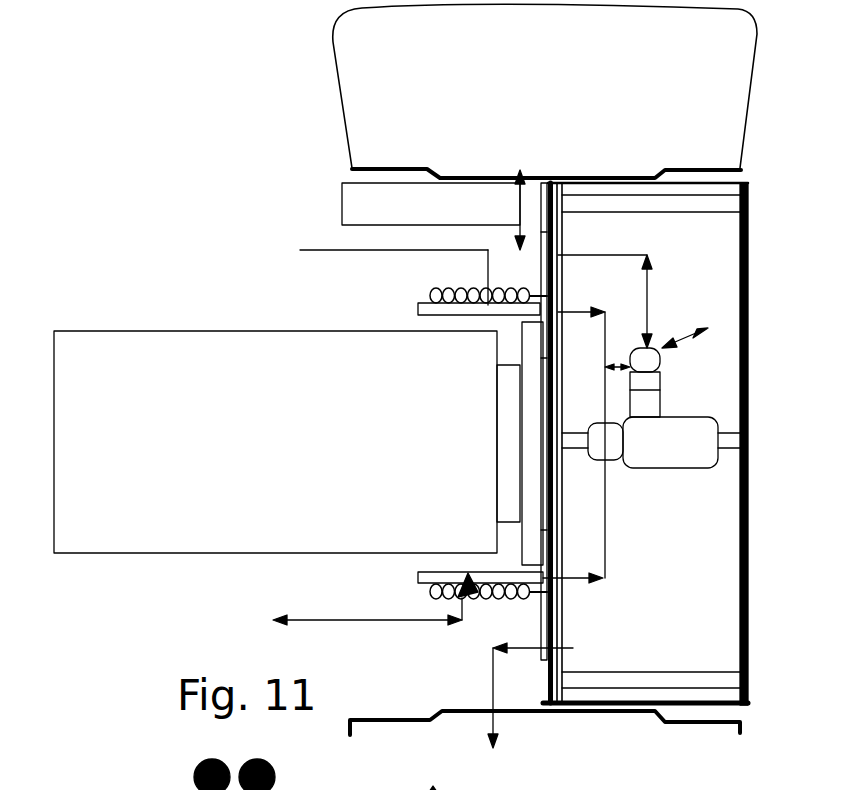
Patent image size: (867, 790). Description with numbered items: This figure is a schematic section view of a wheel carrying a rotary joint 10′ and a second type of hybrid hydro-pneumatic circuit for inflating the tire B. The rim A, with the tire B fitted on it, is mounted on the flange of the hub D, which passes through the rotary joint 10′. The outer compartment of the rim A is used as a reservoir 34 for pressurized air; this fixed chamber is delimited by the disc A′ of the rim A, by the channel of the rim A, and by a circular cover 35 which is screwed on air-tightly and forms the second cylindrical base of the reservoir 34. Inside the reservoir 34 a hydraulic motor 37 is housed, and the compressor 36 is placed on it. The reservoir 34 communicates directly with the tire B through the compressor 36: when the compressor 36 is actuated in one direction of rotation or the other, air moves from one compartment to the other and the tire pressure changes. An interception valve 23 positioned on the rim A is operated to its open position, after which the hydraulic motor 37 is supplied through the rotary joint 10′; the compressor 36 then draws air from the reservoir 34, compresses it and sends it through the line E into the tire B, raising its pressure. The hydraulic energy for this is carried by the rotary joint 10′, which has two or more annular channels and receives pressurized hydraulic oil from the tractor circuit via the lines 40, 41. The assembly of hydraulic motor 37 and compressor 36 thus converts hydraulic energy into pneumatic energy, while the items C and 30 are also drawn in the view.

The rim A is at (698, 150).
The disc of the rim A′ is at (542, 270).
The tire B is at (331, 64).
The cartridge C is at (74, 436).
The hub D is at (423, 538).
The line E is at (647, 302).
The rotary joint 10′ is at (440, 267).
The interception valve 23 is at (648, 362).
The pressure/temperature sensors 30 is at (348, 786).
The reservoir 34 is at (672, 624).
The circular cover 35 is at (748, 498).
The compressor 36 is at (690, 437).
The hydraulic motor 37 is at (612, 448).
The line 40 is at (335, 249).
The line 41 is at (340, 622).